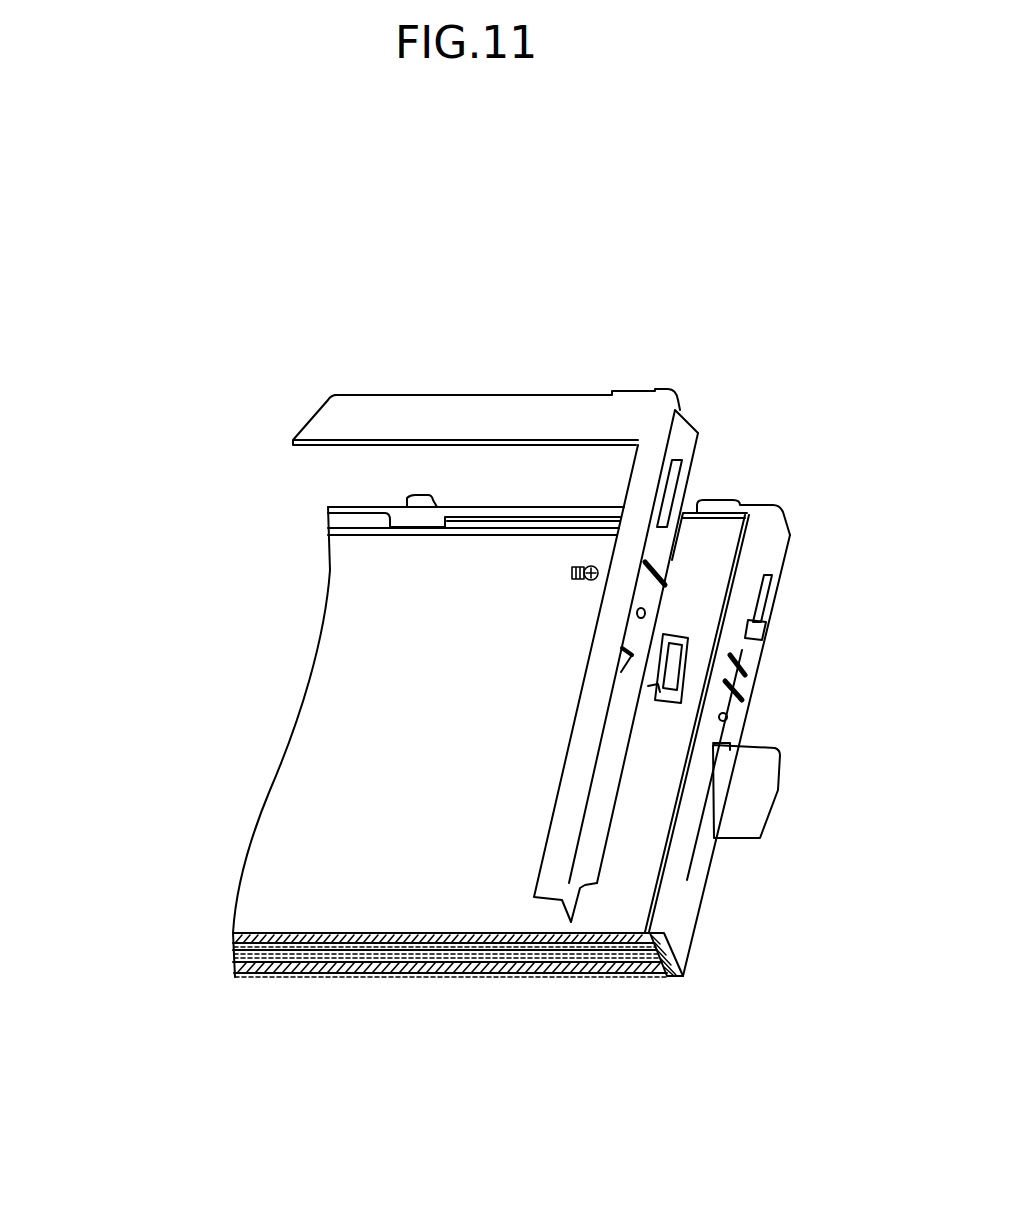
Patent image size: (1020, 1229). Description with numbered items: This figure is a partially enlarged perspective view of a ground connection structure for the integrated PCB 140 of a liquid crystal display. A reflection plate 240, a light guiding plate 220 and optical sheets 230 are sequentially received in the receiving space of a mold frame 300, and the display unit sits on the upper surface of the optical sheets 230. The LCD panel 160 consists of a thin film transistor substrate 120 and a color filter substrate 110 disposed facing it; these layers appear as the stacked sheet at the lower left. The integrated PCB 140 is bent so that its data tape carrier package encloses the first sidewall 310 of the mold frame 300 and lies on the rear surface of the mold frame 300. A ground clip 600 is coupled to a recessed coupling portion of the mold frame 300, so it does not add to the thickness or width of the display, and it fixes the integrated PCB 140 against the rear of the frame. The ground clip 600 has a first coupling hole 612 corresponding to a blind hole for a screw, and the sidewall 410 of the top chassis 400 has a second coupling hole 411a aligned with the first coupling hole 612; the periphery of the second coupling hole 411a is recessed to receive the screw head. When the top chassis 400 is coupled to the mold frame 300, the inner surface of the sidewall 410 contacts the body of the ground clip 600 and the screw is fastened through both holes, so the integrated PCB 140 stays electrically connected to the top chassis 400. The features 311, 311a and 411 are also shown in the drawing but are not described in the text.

The color filter substrate 110 is at (232, 932).
The thin film transistor substrate 120 is at (232, 936).
The integrated PCB 140 is at (743, 748).
The LCD panel 160 is at (106, 862).
The light guiding plate 220 is at (424, 980).
The optical sheets 230 is at (232, 952).
The reflection plate 240 is at (343, 980).
The mold frame 300 is at (673, 976).
The first sidewall 310 is at (687, 920).
The rib 311 is at (730, 748).
The engaging tabs 311a is at (763, 695).
The top chassis 400 is at (668, 400).
The sidewall 410 is at (702, 433).
The opening 411 is at (633, 652).
The second coupling hole 411a is at (748, 600).
The ground clip 600 is at (657, 670).
The first coupling hole 612 is at (745, 632).